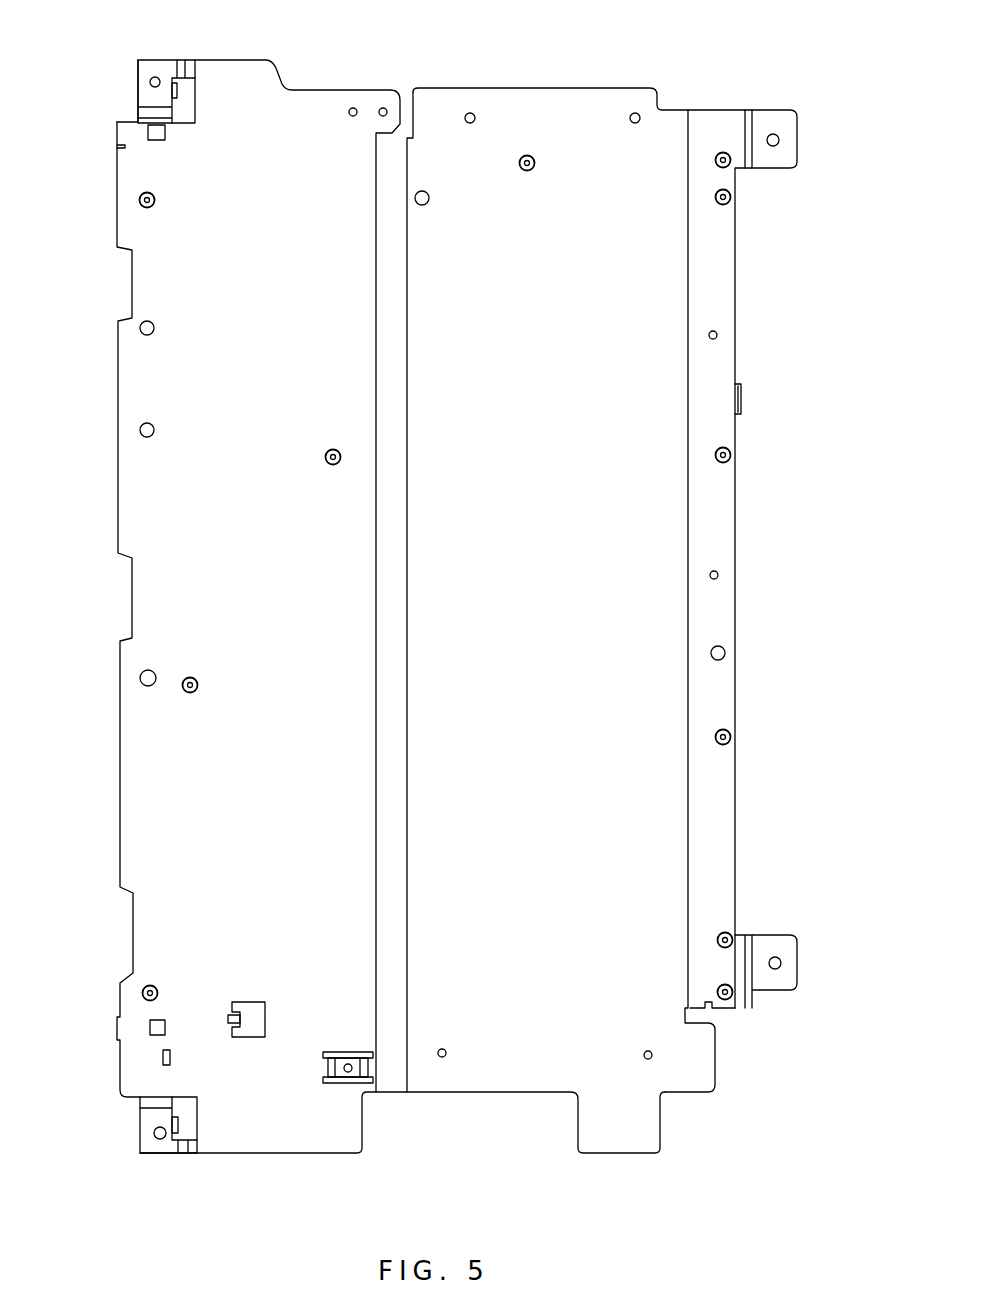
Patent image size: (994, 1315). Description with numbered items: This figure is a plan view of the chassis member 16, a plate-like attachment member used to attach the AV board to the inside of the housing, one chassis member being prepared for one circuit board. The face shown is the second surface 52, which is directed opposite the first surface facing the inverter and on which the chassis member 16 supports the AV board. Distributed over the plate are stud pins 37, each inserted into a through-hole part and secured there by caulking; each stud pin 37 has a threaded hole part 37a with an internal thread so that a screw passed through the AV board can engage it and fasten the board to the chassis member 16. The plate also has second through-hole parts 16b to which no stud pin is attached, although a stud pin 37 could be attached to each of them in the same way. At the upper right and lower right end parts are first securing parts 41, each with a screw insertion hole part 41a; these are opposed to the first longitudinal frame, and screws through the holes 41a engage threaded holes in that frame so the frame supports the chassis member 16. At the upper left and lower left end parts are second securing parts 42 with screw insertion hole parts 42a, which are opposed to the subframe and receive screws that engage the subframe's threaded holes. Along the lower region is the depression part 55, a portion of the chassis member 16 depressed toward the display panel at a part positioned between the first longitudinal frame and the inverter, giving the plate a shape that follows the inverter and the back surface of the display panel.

The chassis member 16 is at (517, 108).
The second through-hole part 16b is at (140, 328).
The stud pin 37 is at (140, 200).
The threaded hole part 37a is at (145, 208).
The first securing part 41 is at (783, 128).
The screw insertion hole part 41a is at (780, 140).
The second securing part 42 is at (145, 72).
The screw insertion hole part 42a is at (150, 82).
The second surface 52 is at (292, 560).
The depression part 55 is at (493, 1010).